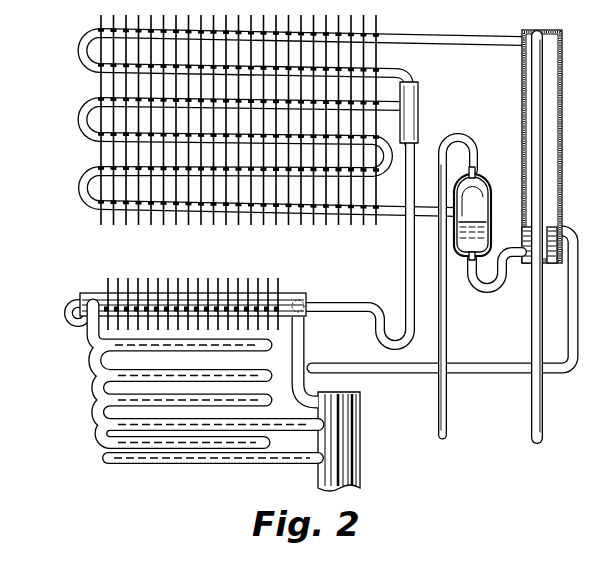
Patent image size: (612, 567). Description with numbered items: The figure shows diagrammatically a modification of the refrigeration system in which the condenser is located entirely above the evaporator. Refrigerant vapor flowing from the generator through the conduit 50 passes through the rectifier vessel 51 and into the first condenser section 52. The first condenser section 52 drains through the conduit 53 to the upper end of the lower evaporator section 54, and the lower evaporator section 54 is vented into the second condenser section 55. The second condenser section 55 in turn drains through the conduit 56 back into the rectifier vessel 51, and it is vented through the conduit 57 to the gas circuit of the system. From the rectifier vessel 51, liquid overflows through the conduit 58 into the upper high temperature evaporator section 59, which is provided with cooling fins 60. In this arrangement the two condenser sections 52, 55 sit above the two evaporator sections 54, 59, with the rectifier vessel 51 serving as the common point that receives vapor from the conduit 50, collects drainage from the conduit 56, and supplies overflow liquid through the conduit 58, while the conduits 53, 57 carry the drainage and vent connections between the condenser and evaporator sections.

The conduit 50 is at (540, 402).
The rectifier vessel 51 is at (559, 212).
The first condenser section 52 is at (82, 60).
The conduit 53 is at (405, 262).
The lower evaporator section 54 is at (92, 357).
The second condenser section 55 is at (88, 135).
The conduit 56 is at (497, 292).
The conduit 57 is at (444, 347).
The conduit 58 is at (574, 318).
The upper high temperature evaporator section 59 is at (287, 293).
The cooling fins 60 is at (182, 280).